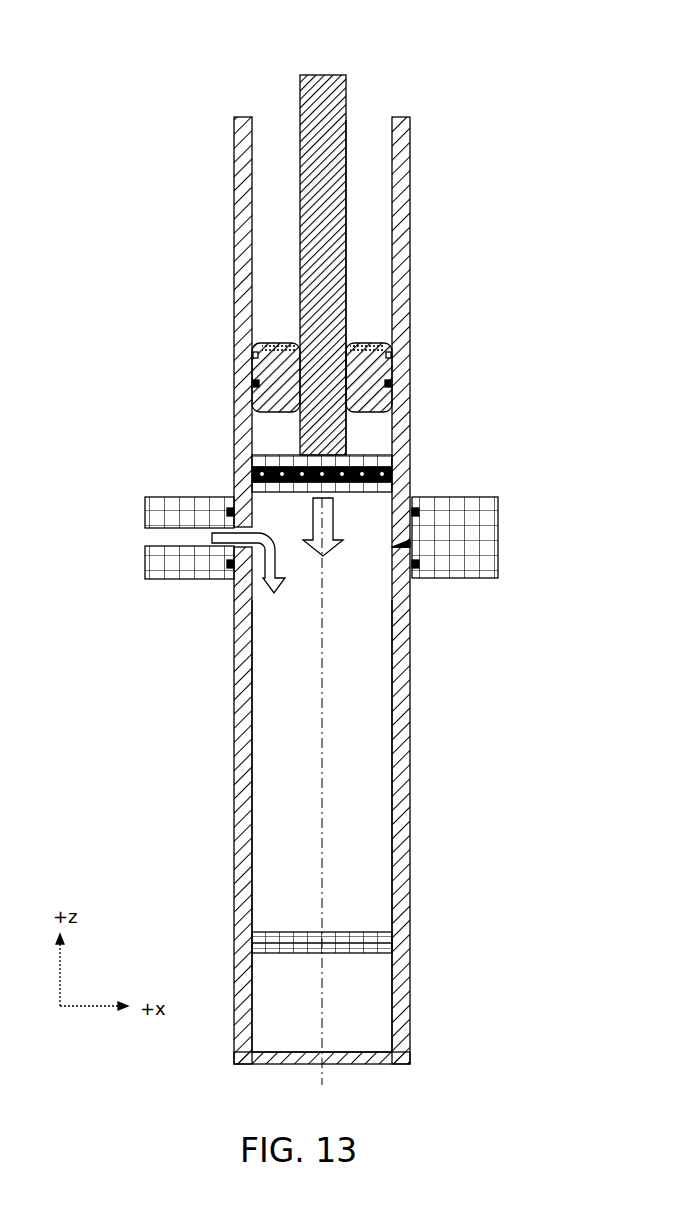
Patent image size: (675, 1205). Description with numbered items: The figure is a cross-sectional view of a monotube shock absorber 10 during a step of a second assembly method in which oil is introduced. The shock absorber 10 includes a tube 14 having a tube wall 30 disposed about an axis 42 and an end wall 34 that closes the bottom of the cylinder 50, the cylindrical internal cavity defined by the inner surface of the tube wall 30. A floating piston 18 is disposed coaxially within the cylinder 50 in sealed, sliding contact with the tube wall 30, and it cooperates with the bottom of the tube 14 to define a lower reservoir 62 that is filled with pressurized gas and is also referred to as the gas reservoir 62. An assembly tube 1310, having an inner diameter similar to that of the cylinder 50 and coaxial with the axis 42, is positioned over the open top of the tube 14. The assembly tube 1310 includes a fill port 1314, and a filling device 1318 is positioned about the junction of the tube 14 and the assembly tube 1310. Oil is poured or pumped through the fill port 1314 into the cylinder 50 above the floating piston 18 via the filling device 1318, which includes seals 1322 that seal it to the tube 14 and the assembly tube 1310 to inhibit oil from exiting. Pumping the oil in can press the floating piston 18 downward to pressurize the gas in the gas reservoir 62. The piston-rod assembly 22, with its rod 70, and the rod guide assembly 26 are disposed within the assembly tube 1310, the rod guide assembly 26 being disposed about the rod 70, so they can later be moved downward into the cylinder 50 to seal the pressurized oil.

The shock absorber 10 is at (103, 620).
The tube 14 is at (231, 879).
The floating piston 18 is at (262, 934).
The piston-rod assembly 22 is at (352, 221).
The rod guide assembly 26 is at (372, 338).
The tube wall 30 is at (243, 810).
The end wall 34 is at (278, 1066).
The axis 42 is at (322, 752).
The cylinder 50 is at (370, 785).
The lower reservoir 62 is at (277, 1015).
The rod 70 is at (346, 190).
The assembly tube 1310 is at (236, 205).
The fill port 1314 is at (234, 490).
The filling device 1318 is at (170, 496).
The seals 1322 is at (416, 506).